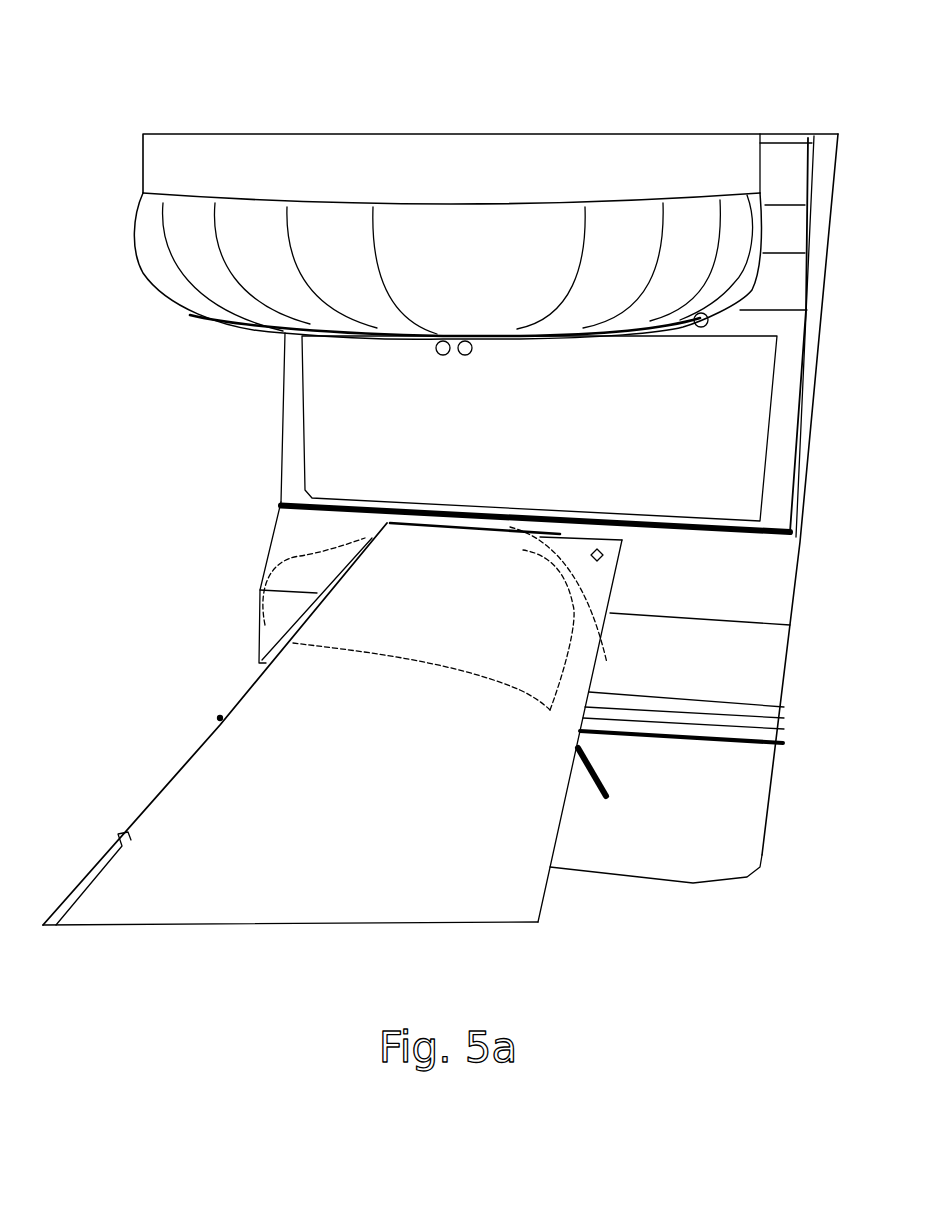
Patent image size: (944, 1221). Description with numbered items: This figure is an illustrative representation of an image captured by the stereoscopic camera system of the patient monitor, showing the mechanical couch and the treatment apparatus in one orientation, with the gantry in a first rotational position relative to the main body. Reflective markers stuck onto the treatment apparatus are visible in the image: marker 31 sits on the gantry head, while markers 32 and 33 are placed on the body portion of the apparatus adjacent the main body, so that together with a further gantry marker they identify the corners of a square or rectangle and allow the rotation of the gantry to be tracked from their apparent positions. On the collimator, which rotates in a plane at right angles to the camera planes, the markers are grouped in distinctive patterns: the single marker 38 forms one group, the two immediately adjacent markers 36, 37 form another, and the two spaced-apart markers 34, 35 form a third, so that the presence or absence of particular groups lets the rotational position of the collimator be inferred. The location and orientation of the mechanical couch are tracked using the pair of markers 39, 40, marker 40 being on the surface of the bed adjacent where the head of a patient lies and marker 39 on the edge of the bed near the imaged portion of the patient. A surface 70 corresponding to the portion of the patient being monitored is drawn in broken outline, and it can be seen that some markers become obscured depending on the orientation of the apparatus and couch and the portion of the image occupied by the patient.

The marker 31 is at (213, 176).
The marker 32 is at (593, 181).
The marker 33 is at (773, 564).
The marker 34 is at (443, 355).
The marker 35 is at (465, 355).
The marker 36 is at (681, 332).
The marker 37 is at (701, 327).
The marker 38 is at (190, 322).
The marker 39 is at (602, 773).
The marker 40 is at (597, 549).
The surface 70 is at (308, 562).